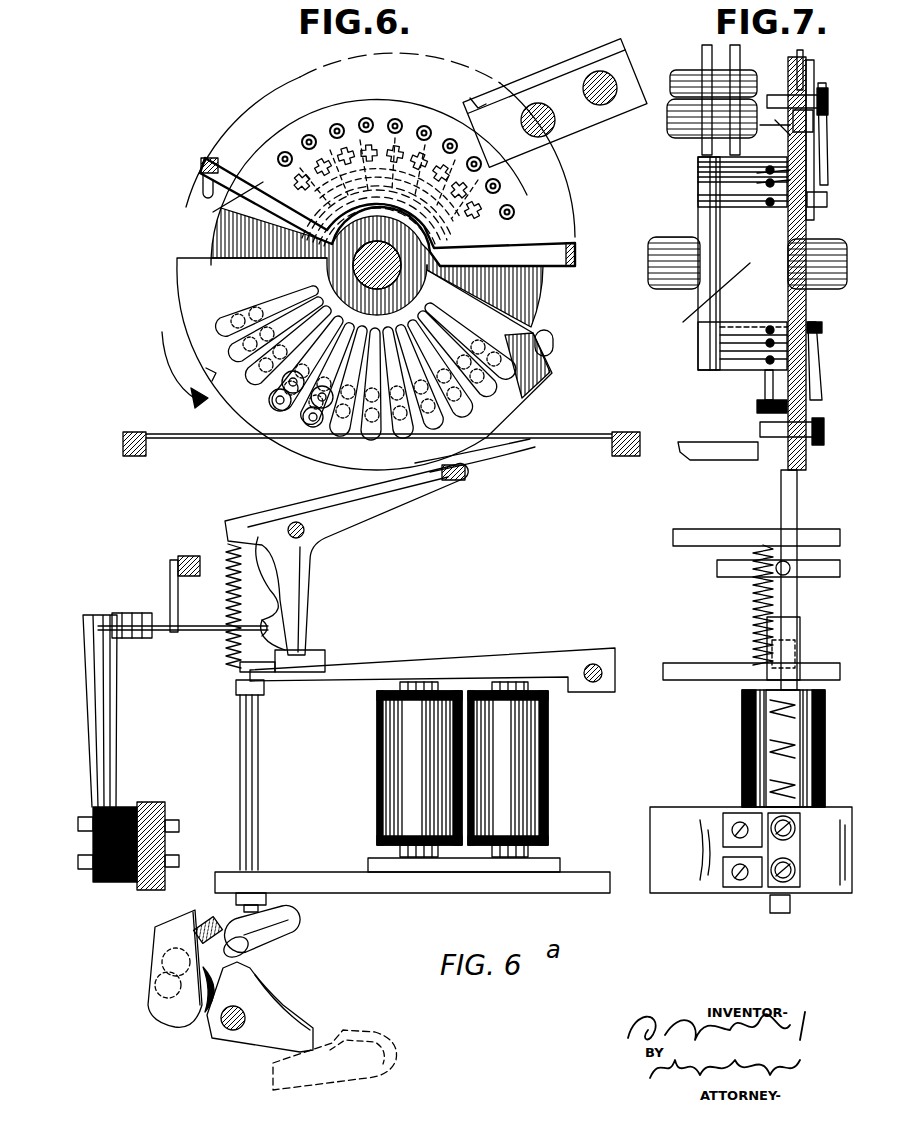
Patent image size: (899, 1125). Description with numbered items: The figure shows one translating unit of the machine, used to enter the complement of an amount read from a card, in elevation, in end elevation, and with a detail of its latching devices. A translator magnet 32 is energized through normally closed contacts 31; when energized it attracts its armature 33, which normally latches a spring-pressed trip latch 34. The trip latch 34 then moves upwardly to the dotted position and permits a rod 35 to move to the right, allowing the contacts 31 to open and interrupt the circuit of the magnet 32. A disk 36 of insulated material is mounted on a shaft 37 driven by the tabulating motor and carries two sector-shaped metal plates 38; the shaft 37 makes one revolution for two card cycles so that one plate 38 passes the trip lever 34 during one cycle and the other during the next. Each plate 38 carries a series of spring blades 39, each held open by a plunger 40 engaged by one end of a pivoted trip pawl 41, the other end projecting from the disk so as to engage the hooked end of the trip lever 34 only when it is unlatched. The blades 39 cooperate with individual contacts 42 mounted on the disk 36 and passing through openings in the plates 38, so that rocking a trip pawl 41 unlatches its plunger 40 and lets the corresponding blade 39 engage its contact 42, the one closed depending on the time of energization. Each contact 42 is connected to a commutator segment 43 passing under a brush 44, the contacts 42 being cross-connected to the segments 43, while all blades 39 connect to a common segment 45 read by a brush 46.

In FIG. 6, the normally closed contacts 31 is at (112, 690).
In FIG. 7, the normally closed contacts 31 is at (793, 762).
In FIG. 6, the translator magnet 32 is at (392, 746).
In FIG. 7, the translator magnet 32 is at (826, 716).
In FIG. 6, the armature 33 is at (420, 664).
In FIG. 6, the trip latch 34 is at (386, 496).
In FIG. 6A, the trip latch 34 is at (383, 1033).
In FIG. 7, the trip latch 34 is at (800, 510).
In FIG. 6, the rod 35 is at (207, 631).
In FIG. 7, the rod 35 is at (803, 634).
In FIG. 6, the disk 36 is at (527, 300).
In FIG. 7, the disk 36 is at (774, 232).
In FIG. 6, the shaft 37 is at (353, 267).
In FIG. 7, the shaft 37 is at (718, 262).
In FIG. 6, the sector-shaped metal plates 38 is at (577, 250).
In FIG. 7, the sector-shaped metal plates 38 is at (808, 310).
In FIG. 6, the spring blades 39 is at (437, 372).
In FIG. 6A, the spring blades 39 is at (165, 944).
In FIG. 7, the spring blades 39 is at (829, 192).
In FIG. 6, the plunger 40 is at (313, 420).
In FIG. 6A, the plunger 40 is at (290, 923).
In FIG. 7, the plunger 40 is at (803, 98).
In FIG. 6, the trip pawl 41 is at (487, 448).
In FIG. 6A, the trip pawl 41 is at (280, 1012).
In FIG. 7, the trip pawl 41 is at (803, 58).
In FIG. 6, the contacts 42 is at (330, 125).
In FIG. 6A, the contacts 42 is at (158, 978).
In FIG. 7, the contacts 42 is at (815, 116).
In FIG. 6, the commutator segment 43 is at (345, 160).
In FIG. 7, the commutator segment 43 is at (790, 170).
In FIG. 6, the brush 44 is at (405, 130).
In FIG. 7, the brush 44 is at (790, 125).
In FIG. 7, the common segment 45 is at (708, 204).
In FIG. 6, the brush 46 is at (480, 108).
In FIG. 7, the brush 46 is at (705, 148).